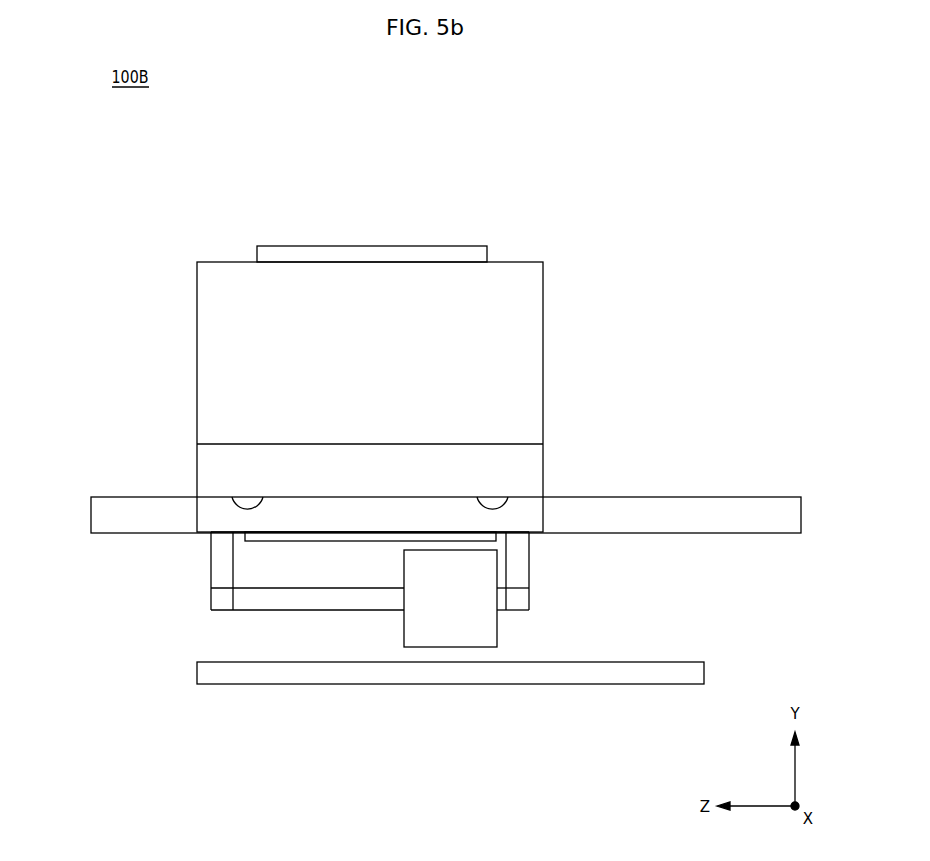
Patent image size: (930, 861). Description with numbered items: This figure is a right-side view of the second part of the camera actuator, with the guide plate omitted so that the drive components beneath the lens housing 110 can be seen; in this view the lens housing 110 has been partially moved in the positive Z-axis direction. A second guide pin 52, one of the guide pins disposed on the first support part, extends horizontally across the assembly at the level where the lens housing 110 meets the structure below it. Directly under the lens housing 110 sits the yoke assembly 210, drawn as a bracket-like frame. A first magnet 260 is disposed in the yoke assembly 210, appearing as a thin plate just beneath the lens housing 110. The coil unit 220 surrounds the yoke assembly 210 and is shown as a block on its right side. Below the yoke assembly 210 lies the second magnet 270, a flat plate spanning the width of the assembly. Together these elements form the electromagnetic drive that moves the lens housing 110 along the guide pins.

The lens housing 110 is at (517, 263).
The second guide pin 52 is at (100, 516).
The yoke assembly 210 is at (265, 603).
The first magnet 260 is at (343, 541).
The coil unit 220 is at (453, 624).
The second magnet 270 is at (408, 675).